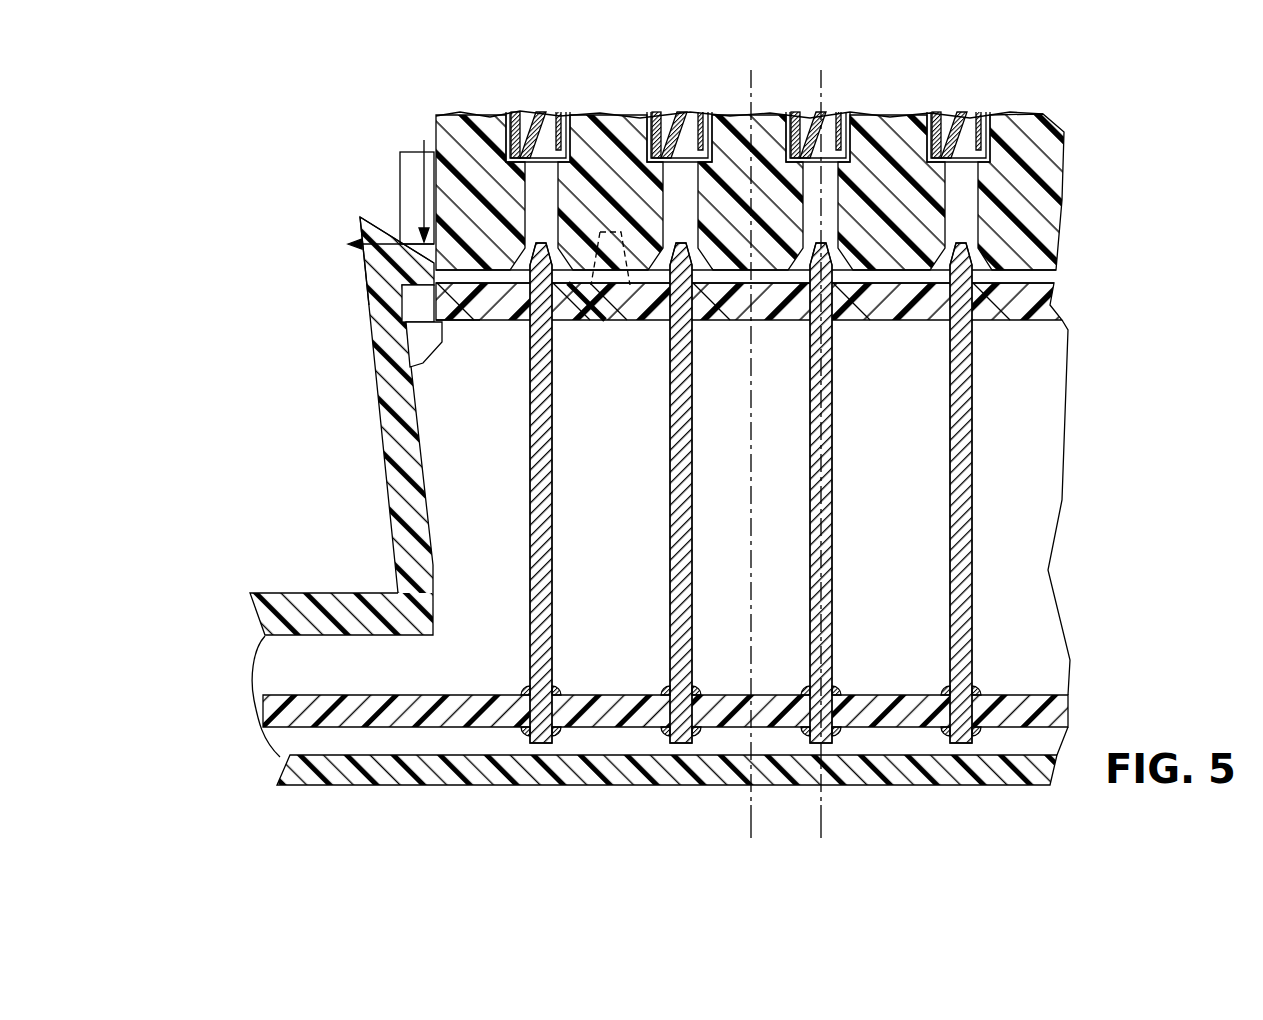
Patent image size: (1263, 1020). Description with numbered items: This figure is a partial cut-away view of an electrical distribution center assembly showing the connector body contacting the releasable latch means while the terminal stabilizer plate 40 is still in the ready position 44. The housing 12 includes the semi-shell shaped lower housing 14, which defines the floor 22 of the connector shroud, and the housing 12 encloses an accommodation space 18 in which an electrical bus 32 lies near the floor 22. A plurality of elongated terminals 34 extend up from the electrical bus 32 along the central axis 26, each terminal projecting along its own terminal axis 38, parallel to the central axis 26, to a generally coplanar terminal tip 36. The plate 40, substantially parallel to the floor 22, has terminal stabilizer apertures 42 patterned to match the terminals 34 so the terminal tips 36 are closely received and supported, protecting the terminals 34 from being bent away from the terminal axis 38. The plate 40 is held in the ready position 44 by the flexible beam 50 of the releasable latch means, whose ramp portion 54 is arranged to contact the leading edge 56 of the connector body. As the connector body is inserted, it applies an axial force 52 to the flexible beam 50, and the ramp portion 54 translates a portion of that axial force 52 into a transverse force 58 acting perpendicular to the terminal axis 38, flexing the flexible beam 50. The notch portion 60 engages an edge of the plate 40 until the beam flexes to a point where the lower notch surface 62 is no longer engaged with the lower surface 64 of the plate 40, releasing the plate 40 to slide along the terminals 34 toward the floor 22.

The housing 12 is at (250, 293).
The lower housing 14 is at (285, 593).
The accommodation space 18 is at (268, 658).
The floor 22 is at (433, 786).
The central axis 26 is at (751, 808).
The electrical bus 32 is at (265, 701).
The terminals 34 is at (815, 400).
The terminal tips 36 is at (961, 243).
The terminal axis 38 is at (821, 808).
The terminal stabilizer plate 40 is at (1040, 320).
The terminal stabilizer apertures 42 is at (987, 310).
The ready position 44 is at (352, 245).
The flexible beam 50 is at (405, 452).
The axial force 52 is at (423, 162).
The ramp portion 54 is at (383, 222).
The leading edge 56 is at (1017, 273).
The transverse force 58 is at (365, 227).
The notch portion 60 is at (427, 296).
The lower notch surface 62 is at (420, 326).
The lower surface 64 is at (472, 322).